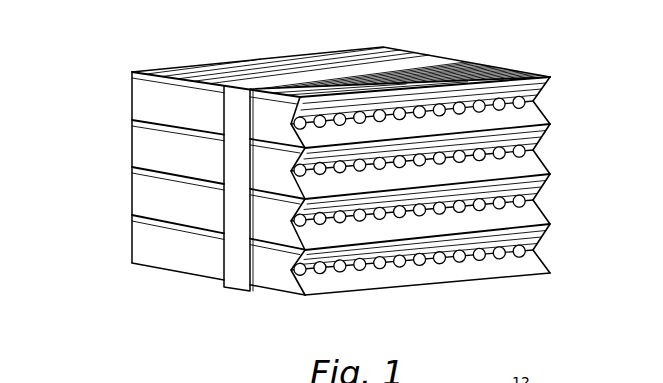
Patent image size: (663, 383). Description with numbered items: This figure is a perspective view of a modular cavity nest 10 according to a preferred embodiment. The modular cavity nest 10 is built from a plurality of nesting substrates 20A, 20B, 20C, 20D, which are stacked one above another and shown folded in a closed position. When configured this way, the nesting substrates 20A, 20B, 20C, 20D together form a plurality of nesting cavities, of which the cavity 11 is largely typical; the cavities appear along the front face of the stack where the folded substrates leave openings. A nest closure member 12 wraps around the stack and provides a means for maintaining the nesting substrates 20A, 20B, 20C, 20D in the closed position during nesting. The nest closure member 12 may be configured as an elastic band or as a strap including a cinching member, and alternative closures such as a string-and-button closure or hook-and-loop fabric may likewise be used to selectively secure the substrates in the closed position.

The modular cavity nest 10 is at (122, 45).
The cavity 11 is at (536, 101).
The nest closure member 12 is at (500, 67).
The nesting substrate 20A is at (136, 86).
The nesting substrate 20B is at (136, 133).
The nesting substrate 20C is at (136, 178).
The nesting substrate 20D is at (136, 229).